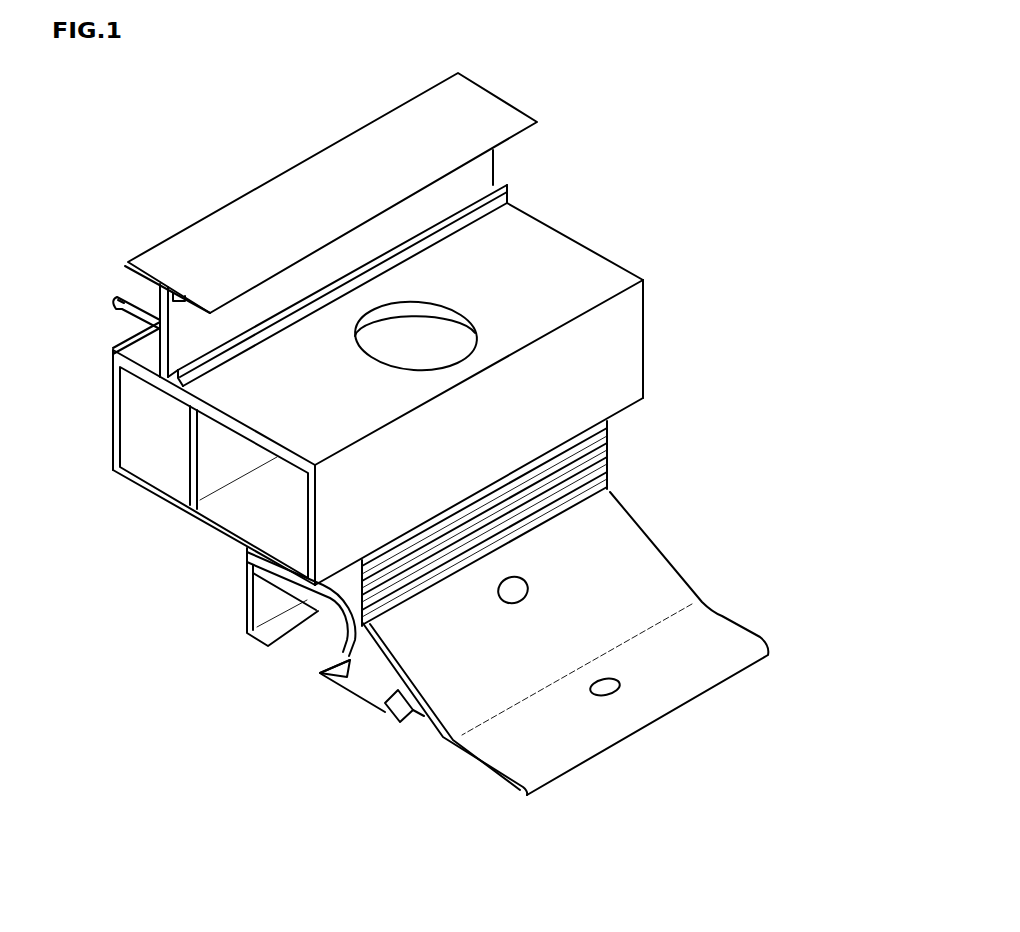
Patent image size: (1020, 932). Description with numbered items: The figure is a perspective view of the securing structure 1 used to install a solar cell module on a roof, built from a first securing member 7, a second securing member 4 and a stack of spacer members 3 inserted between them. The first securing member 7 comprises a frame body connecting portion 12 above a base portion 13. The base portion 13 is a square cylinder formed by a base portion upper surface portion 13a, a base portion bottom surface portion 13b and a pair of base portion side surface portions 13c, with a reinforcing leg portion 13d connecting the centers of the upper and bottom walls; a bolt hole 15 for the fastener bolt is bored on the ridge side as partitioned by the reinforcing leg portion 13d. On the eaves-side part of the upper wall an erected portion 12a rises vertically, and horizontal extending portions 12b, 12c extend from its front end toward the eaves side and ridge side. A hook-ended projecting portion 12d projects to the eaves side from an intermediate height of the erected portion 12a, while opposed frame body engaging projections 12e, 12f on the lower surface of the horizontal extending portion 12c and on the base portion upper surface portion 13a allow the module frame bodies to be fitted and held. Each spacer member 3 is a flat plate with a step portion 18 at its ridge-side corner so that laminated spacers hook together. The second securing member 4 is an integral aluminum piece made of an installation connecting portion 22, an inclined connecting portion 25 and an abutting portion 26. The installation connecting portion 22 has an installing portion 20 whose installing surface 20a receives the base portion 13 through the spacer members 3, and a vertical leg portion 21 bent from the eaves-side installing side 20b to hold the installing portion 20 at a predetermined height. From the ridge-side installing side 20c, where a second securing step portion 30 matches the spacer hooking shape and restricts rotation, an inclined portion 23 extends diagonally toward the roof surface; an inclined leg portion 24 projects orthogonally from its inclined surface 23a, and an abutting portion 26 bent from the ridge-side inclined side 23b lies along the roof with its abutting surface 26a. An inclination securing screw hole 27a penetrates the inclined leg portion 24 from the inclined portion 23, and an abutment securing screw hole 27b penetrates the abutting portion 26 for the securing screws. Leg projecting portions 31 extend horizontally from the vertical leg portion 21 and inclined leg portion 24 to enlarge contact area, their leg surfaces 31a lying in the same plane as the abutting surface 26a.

The securing structure 1 is at (708, 204).
The spacer member 3 is at (742, 418).
The second securing member 4 is at (763, 503).
The first securing member 7 is at (641, 234).
The frame body connecting portion 12 is at (510, 103).
The erected portion 12a is at (497, 173).
The horizontal extending portion 12b is at (413, 108).
The horizontal extending portion 12c is at (540, 127).
The projecting portion 12d is at (120, 302).
The frame body engaging projection 12e is at (258, 340).
The frame body engaging projection 12f is at (182, 303).
The base portion 13 is at (637, 333).
The base portion upper surface portion 13a is at (545, 243).
The base portion bottom surface portion 13b is at (162, 485).
The base portion side surface portion 13c is at (113, 397).
The reinforcing leg portion 13d is at (200, 470).
The bolt hole 15 is at (463, 312).
The step portion 18 is at (607, 433).
The installing portion 20 is at (318, 597).
The installing surface 20a is at (320, 575).
The eaves-side installing side 20b is at (247, 557).
The ridge-side installing side 20c is at (365, 628).
The vertical leg portion 21 is at (247, 598).
The installation connecting portion 22 is at (168, 612).
The inclined portion 23 is at (566, 654).
The inclined surface 23a is at (667, 573).
The ridge-side inclined side 23b is at (637, 640).
The inclined leg portion 24 is at (330, 680).
The inclined connecting portion 25 is at (288, 714).
The abutting portion 26 is at (577, 743).
The abutting surface 26a is at (480, 773).
The inclination securing screw hole 27a is at (527, 590).
The abutment securing screw hole 27b is at (620, 682).
The second securing step portion 30 is at (440, 587).
The leg projecting portion 31 is at (268, 650).
The leg surface 31a is at (247, 637).